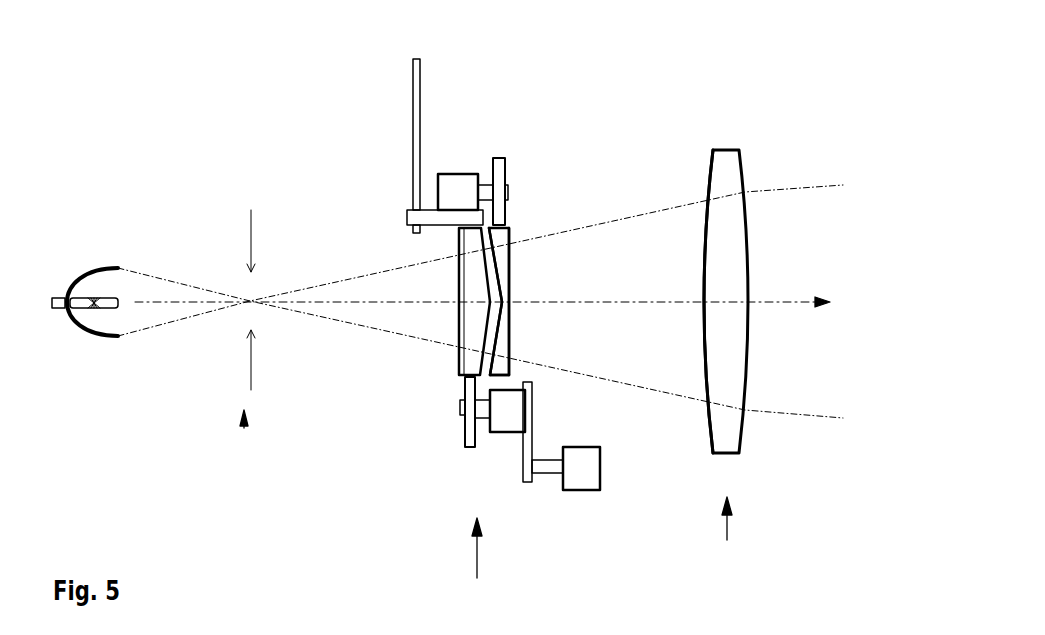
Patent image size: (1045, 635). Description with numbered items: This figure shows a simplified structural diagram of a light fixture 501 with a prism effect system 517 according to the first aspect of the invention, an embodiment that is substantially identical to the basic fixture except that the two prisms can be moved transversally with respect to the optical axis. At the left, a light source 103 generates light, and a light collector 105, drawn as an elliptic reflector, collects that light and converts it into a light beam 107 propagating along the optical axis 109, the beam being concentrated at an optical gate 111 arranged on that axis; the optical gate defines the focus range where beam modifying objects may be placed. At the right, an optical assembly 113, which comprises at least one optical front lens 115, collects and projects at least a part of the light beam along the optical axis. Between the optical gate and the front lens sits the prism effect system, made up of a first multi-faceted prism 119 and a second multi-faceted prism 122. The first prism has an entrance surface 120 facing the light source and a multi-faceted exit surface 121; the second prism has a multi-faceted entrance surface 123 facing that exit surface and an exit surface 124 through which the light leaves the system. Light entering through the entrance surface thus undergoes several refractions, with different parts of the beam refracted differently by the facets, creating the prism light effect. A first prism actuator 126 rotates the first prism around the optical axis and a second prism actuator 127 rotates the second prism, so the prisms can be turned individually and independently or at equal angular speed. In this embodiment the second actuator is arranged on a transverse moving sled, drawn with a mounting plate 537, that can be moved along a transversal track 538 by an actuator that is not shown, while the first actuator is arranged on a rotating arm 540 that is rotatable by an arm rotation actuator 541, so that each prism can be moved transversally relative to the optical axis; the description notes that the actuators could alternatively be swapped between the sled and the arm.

The illumination system 501 is at (200, 103).
The light source 103 is at (91, 300).
The light collector 105 is at (92, 336).
The light beam 107 is at (320, 280).
The optical axis 109 is at (792, 303).
The optical gate 111 is at (244, 428).
The optical assembly 113 is at (727, 540).
The optical front lens 115 is at (718, 190).
The first multi-faceted prism 119 is at (399, 363).
The entrance surface 120 is at (459, 330).
The multi-faceted exit surface 121 is at (487, 319).
The second multi-faceted prism 122 is at (505, 367).
The multi-faceted entrance surface 123 is at (500, 330).
The exit surface 124 is at (505, 346).
The first prism actuator 126 is at (415, 412).
The second prism actuator 127 is at (452, 192).
The prism effect system 517 is at (477, 578).
The mounting plate 537 is at (428, 218).
The transversal track 538 is at (418, 137).
The rotating arm 540 is at (522, 448).
The arm rotation actuator 541 is at (572, 460).